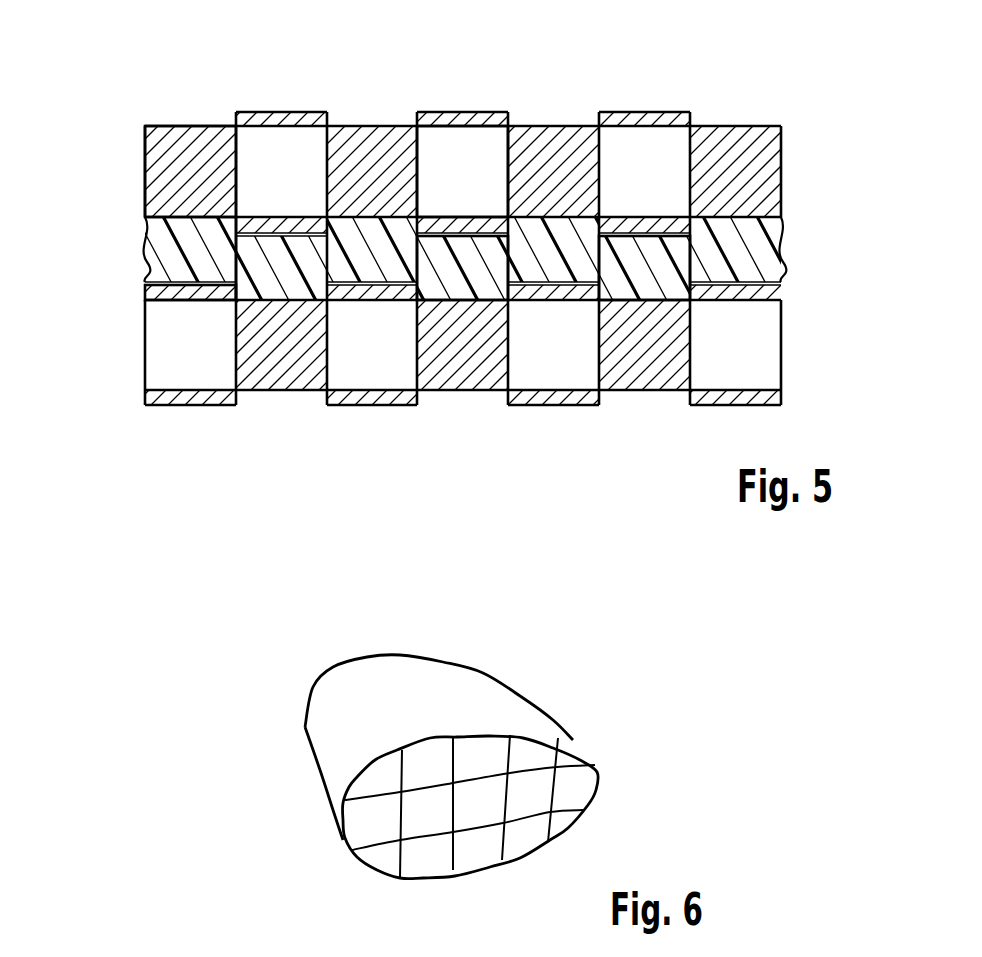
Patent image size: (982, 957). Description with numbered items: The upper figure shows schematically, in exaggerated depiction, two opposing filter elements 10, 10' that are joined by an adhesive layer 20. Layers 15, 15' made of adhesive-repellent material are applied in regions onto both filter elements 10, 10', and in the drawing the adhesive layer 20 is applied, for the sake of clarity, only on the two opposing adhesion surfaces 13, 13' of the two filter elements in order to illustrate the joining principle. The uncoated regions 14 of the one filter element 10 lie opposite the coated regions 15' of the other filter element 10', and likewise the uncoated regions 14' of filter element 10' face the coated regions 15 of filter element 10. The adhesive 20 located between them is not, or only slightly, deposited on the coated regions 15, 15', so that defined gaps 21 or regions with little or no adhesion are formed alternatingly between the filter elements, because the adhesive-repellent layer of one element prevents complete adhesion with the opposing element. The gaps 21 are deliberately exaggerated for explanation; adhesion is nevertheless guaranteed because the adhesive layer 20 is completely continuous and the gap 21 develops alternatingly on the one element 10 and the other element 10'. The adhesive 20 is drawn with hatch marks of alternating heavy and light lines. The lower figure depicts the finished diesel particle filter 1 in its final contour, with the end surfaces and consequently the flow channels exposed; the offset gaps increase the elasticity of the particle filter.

In FIG. 5, the filter element 10 is at (491, 205).
In FIG. 5, the filter element 10' is at (491, 314).
In FIG. 5, the adhesion surface 13 is at (491, 255).
In FIG. 5, the adhesion surface 13' is at (508, 270).
In FIG. 5, the uncoated region 14 is at (501, 129).
In FIG. 5, the uncoated region 14' is at (462, 355).
In FIG. 5, the layer made of adhesive-repellent material 15 is at (213, 119).
In FIG. 5, the layer made of adhesive-repellent material 15' is at (150, 324).
In FIG. 5, the adhesive layer 20 is at (642, 267).
In FIG. 5, the gap 21 is at (235, 257).
In FIG. 6, the diesel particle filter 1 is at (569, 684).